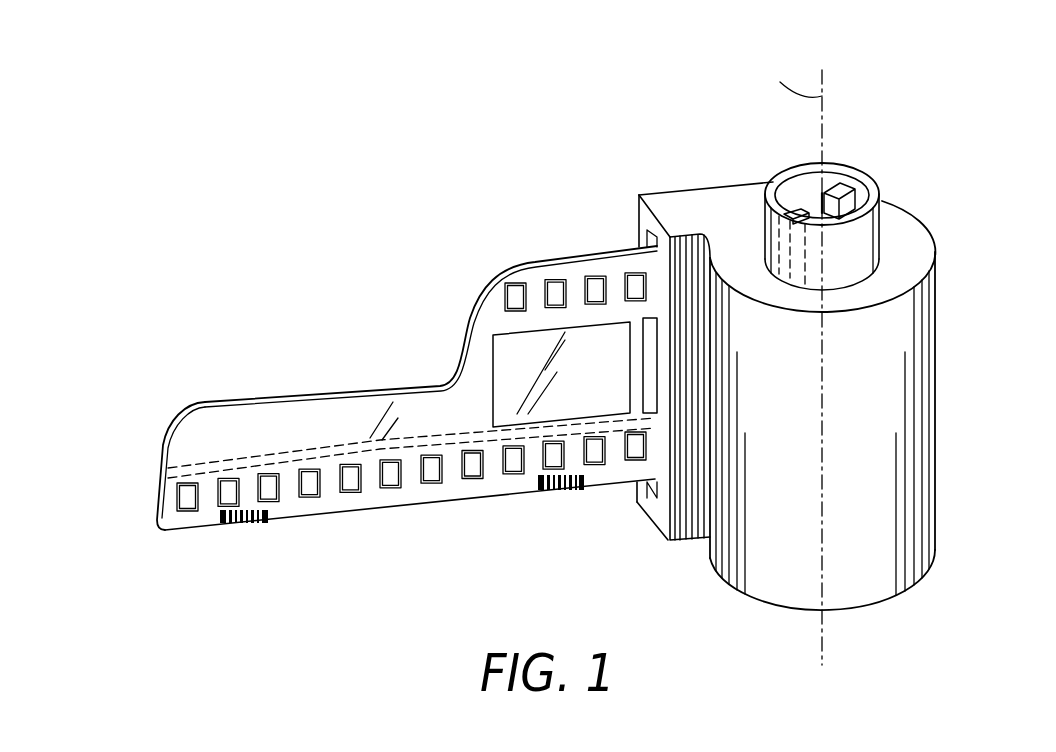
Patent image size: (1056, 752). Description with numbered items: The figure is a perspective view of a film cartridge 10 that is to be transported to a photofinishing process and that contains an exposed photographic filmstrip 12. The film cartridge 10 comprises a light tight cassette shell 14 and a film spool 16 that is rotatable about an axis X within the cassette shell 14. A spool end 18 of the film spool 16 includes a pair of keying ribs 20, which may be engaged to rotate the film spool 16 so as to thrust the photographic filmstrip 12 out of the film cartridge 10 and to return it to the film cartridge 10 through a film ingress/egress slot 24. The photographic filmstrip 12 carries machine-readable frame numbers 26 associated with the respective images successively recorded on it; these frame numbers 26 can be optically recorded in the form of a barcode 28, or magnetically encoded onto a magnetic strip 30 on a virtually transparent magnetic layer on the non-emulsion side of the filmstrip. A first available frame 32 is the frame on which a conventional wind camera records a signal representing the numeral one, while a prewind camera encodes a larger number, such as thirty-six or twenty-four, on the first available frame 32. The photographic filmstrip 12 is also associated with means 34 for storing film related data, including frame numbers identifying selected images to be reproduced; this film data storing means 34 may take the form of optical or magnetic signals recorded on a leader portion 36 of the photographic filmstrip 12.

The film cartridge 10 is at (566, 367).
The photographic filmstrip 12 is at (308, 430).
The light tight cassette shell 14 is at (937, 395).
The film spool 16 is at (866, 248).
The spool end 18 is at (880, 198).
The keying ribs 20 is at (797, 211).
The film ingress/egress slot 24 is at (647, 245).
The machine-readable frame numbers 26 is at (457, 455).
The barcode 28 is at (537, 490).
The magnetic strip 30 is at (370, 462).
The first available frame 32 is at (515, 352).
The means for storing film related data 34 is at (290, 472).
The leader portion 36 is at (167, 447).